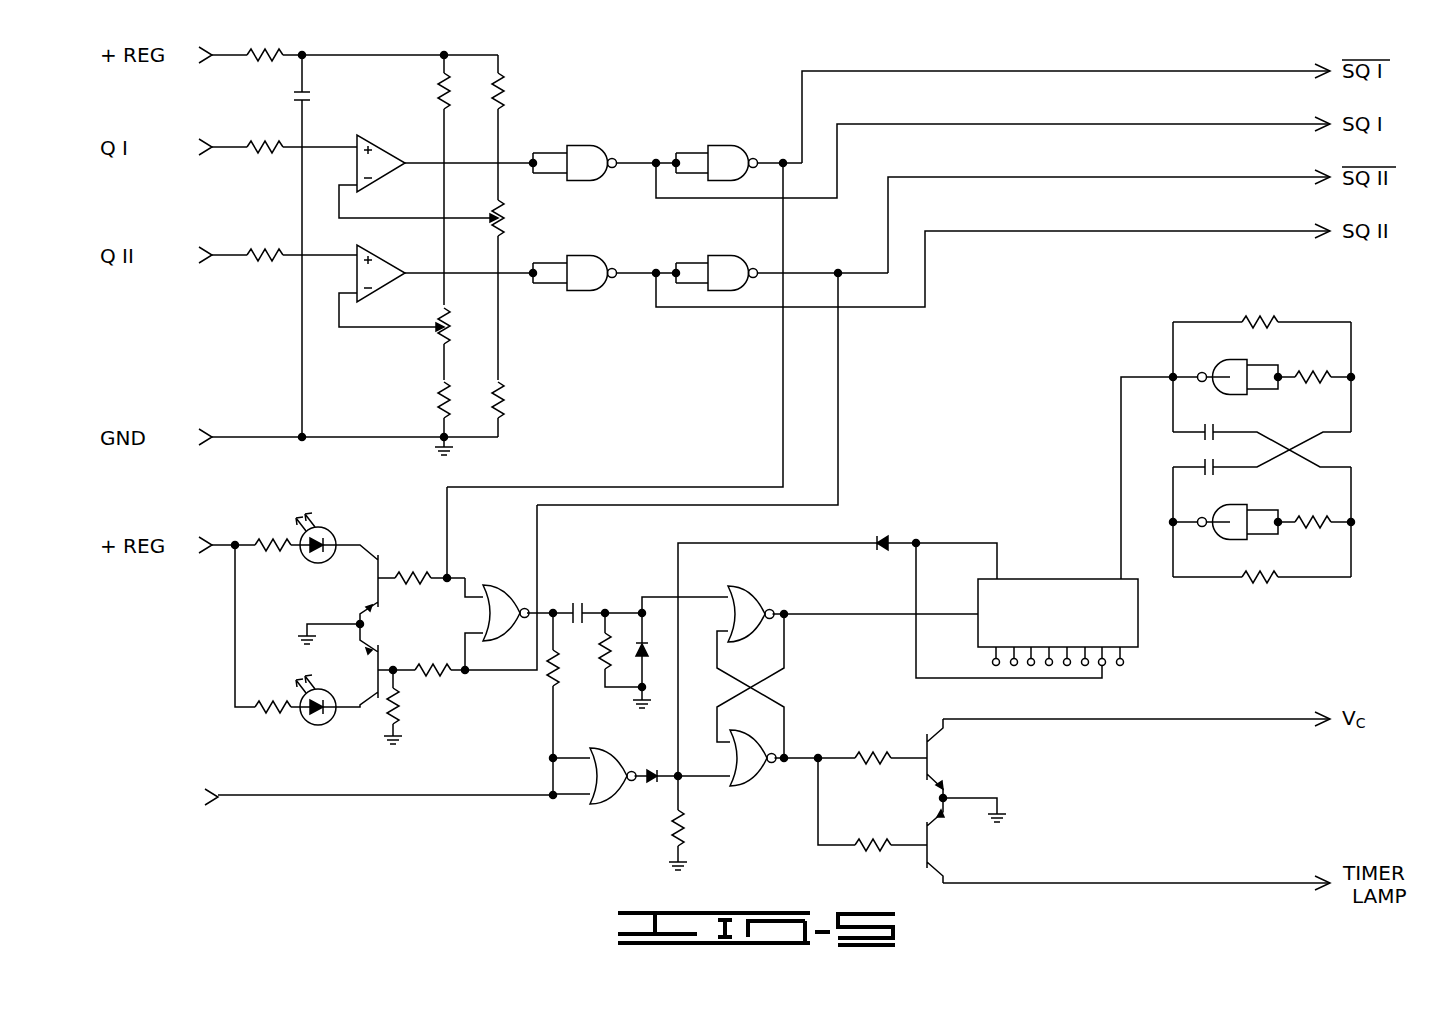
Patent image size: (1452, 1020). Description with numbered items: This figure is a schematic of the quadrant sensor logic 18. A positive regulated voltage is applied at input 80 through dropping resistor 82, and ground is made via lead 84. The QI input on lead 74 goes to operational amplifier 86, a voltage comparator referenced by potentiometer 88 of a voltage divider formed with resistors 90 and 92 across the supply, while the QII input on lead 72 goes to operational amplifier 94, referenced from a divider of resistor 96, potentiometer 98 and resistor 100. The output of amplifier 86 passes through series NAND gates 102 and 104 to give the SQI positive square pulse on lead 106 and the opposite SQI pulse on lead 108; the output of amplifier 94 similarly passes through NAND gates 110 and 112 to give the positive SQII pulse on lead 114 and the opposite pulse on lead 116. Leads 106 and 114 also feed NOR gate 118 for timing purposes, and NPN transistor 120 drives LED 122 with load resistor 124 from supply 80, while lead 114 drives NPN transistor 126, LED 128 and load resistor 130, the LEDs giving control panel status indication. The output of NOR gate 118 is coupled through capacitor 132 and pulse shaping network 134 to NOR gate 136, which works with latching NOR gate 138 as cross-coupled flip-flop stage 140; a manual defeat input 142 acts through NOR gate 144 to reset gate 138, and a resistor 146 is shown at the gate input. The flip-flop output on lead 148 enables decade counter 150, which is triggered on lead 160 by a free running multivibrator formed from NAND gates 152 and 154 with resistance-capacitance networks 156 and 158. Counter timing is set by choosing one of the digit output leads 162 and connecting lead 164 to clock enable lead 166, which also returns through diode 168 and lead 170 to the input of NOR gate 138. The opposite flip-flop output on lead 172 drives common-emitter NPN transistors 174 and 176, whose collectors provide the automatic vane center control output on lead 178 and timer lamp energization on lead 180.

The quadrant sensor logic 18 is at (621, 97).
The QII input lead 72 is at (218, 255).
The QI input lead 74 is at (218, 147).
The positive regulated voltage input 80 is at (218, 55).
The dropping resistor 82 is at (282, 55).
The ground lead 84 is at (218, 437).
The operational amplifier 86 is at (382, 143).
The potentiometer 88 is at (504, 213).
The resistor 90 is at (504, 90).
The resistor 92 is at (504, 402).
The operational amplifier 94 is at (385, 253).
The resistor 96 is at (440, 90).
The potentiometer 98 is at (450, 328).
The resistor 100 is at (440, 403).
The NAND gate 102 is at (582, 145).
The NAND gate 104 is at (722, 145).
The SQI output lead 106 is at (1188, 71).
The SQI output lead 108 is at (1190, 124).
The NAND gate 110 is at (582, 255).
The NAND gate 112 is at (722, 255).
The SQII output lead 114 is at (1190, 177).
The SQII output lead 116 is at (1190, 231).
The NOR gate 118 is at (534, 586).
The NPN transistor 120 is at (382, 563).
The LED 122 is at (328, 530).
The load resistor 124 is at (272, 535).
The NPN transistor 126 is at (385, 658).
The LED 128 is at (320, 726).
The load resistor 130 is at (270, 712).
The coupling capacitor 132 is at (586, 602).
The pulse shaping network 134 is at (642, 684).
The NOR gate 136 is at (742, 590).
The latching NOR gate 138 is at (760, 784).
The flip-flop stage 140 is at (821, 696).
The manual defeat input 142 is at (243, 797).
The NOR gate 144 is at (608, 802).
The resistor 146 is at (550, 688).
The output lead 148 is at (833, 617).
The decade counter 150 is at (1138, 614).
The NAND gate 152 is at (1228, 358).
The NAND gate 154 is at (1225, 505).
The resistance-capacitance network 156 is at (1292, 429).
The resistance-capacitance network 158 is at (1323, 451).
The output lead 160 is at (1121, 440).
The digit output leads 162 is at (1148, 652).
The lead 164 is at (916, 645).
The clock enable lead 166 is at (958, 543).
The diode 168 is at (884, 545).
The lead 170 is at (778, 543).
The lead 172 is at (800, 758).
The NPN transistor 174 is at (930, 758).
The NPN transistor 176 is at (930, 845).
The output lead 178 is at (1228, 719).
The lead 180 is at (1220, 883).